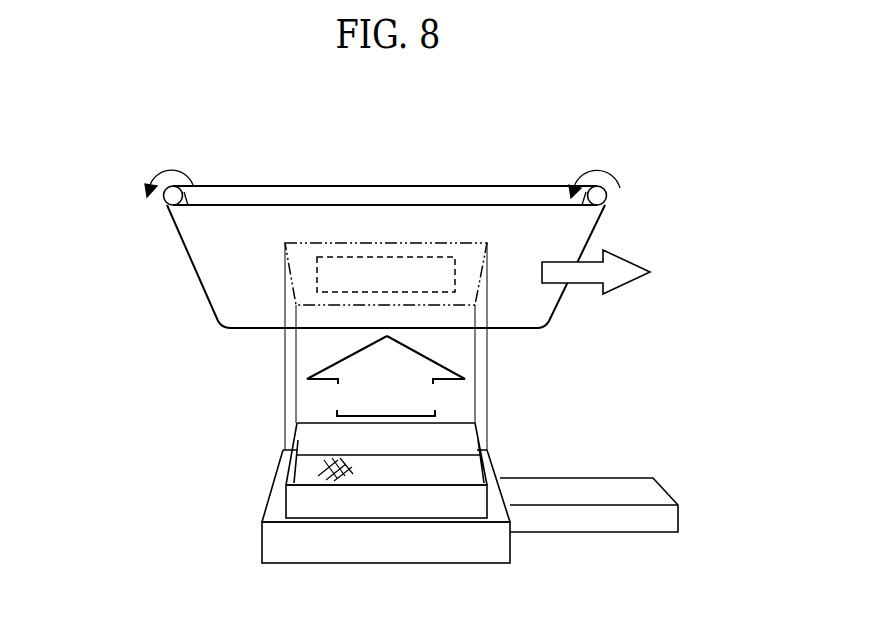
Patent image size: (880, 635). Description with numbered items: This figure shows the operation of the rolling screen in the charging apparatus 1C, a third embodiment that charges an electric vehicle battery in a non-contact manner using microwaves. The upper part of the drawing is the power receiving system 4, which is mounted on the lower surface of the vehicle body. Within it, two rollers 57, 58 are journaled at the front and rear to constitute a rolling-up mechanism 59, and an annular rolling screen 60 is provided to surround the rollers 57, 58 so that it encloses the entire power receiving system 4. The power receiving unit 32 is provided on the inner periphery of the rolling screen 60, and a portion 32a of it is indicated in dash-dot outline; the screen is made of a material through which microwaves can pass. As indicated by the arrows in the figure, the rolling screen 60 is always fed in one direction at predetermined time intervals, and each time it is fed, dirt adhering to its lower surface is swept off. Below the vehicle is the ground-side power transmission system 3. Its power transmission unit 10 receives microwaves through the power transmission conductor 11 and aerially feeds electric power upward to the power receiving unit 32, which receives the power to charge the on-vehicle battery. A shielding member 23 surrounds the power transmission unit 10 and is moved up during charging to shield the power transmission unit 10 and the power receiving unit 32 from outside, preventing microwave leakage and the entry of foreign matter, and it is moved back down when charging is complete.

The power receiving system 4 is at (523, 162).
The rolling screen 60 is at (265, 186).
The roller 57 is at (168, 197).
The roller 58 is at (598, 196).
The rolling-up mechanism 59 is at (625, 170).
The power receiving unit 32 is at (345, 256).
The power receiving coil 32a is at (398, 265).
The charging apparatus 1C is at (207, 437).
The power transmission system 3 is at (573, 457).
The power transmission conductor 11 is at (647, 495).
The shielding member 23 is at (397, 502).
The power transmission unit 10 is at (333, 473).